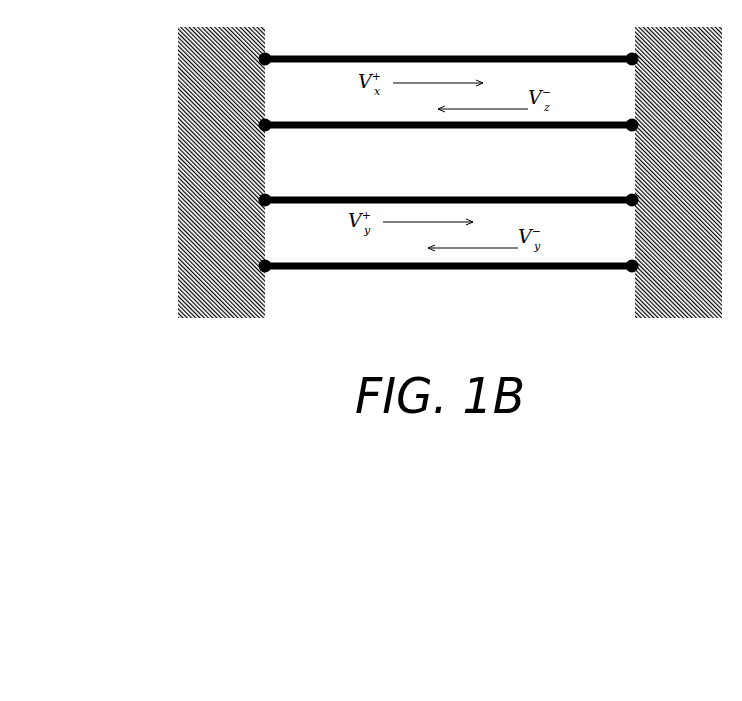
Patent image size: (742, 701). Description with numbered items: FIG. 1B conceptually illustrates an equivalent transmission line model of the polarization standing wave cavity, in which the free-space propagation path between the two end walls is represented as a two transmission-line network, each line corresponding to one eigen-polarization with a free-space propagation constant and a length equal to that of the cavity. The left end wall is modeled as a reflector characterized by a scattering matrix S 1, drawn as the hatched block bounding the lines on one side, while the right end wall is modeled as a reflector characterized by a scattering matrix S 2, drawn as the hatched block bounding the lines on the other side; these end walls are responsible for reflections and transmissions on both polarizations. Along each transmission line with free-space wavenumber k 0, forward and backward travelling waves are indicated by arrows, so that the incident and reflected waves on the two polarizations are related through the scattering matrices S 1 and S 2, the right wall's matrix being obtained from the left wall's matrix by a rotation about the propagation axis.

The first conductive ground plane / substrate S1 1 is at (221, 172).
The second conductive ground plane / substrate S2 2 is at (678, 172).
The coupled transmission lines of length L and wavenumber k0 0 is at (449, 183).